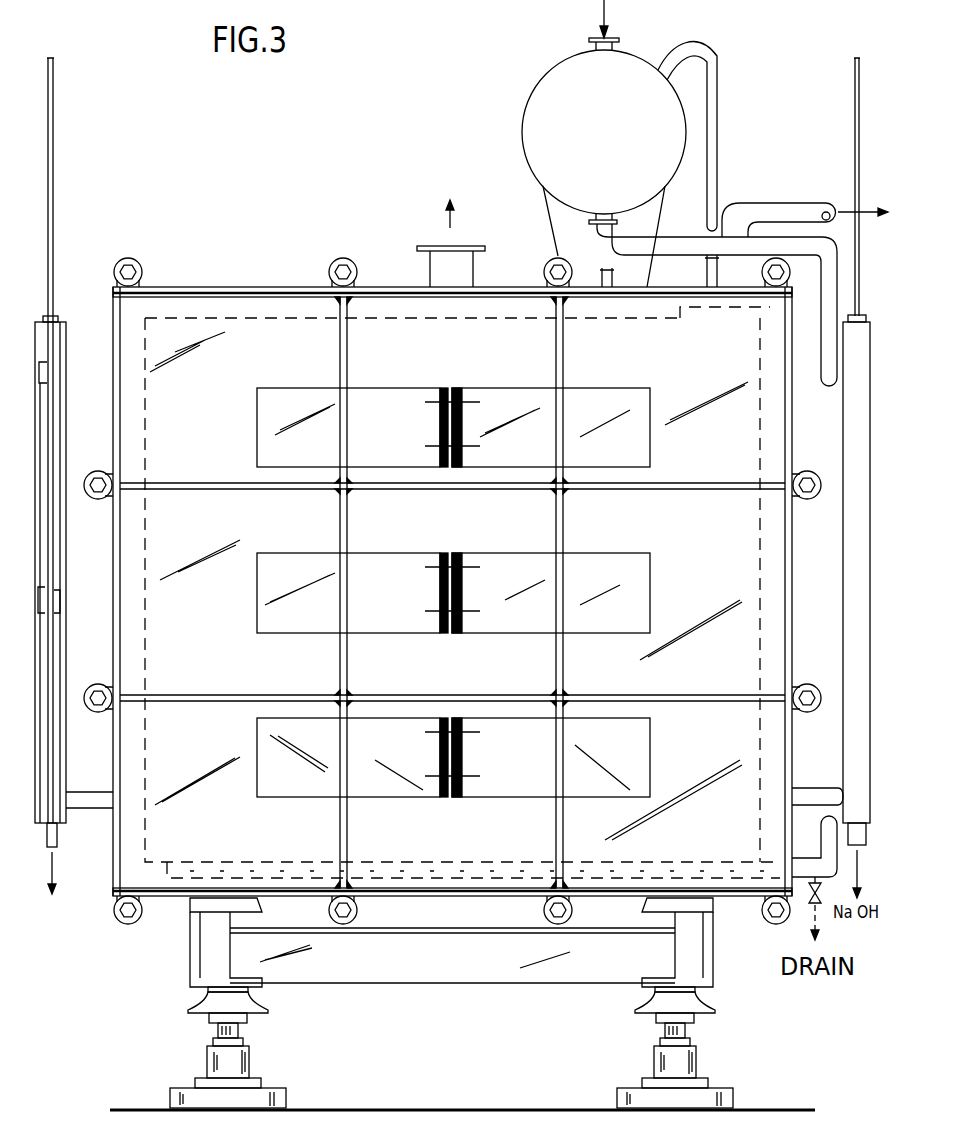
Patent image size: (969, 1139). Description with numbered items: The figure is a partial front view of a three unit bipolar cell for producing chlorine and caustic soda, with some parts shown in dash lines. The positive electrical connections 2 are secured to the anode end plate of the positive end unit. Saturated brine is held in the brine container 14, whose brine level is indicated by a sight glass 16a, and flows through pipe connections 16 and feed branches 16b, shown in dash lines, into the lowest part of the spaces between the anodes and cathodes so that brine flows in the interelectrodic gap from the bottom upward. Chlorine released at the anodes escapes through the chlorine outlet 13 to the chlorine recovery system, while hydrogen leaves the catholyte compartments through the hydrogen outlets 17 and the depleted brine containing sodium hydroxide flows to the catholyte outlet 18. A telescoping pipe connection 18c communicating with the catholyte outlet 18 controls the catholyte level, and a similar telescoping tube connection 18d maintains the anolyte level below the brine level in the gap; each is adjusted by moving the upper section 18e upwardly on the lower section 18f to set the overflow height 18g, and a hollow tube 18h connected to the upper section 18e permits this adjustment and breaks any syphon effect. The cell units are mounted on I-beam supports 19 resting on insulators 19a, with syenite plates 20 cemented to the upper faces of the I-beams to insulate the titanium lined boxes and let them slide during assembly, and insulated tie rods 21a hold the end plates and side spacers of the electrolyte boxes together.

The positive electrical connections 2 is at (466, 392).
The chlorine outlet 13 is at (462, 268).
The brine container 14 is at (604, 143).
The pipe connections 16 is at (826, 322).
The sight glass 16a is at (712, 182).
The feed branches 16b is at (425, 876).
The hydrogen outlets 17 is at (778, 212).
The catholyte outlet 18 is at (90, 797).
The telescoping pipe connection 18c is at (58, 567).
The telescoping tube connection 18d is at (852, 583).
The upper section 18e is at (58, 418).
The lower section 18f is at (58, 656).
The overflow height 18g is at (60, 360).
The hollow tube 18h is at (54, 213).
The I-beam supports 19 is at (230, 950).
The insulators 19a is at (265, 1010).
The syenite plates 20 is at (200, 900).
The tie rods 21a is at (330, 273).